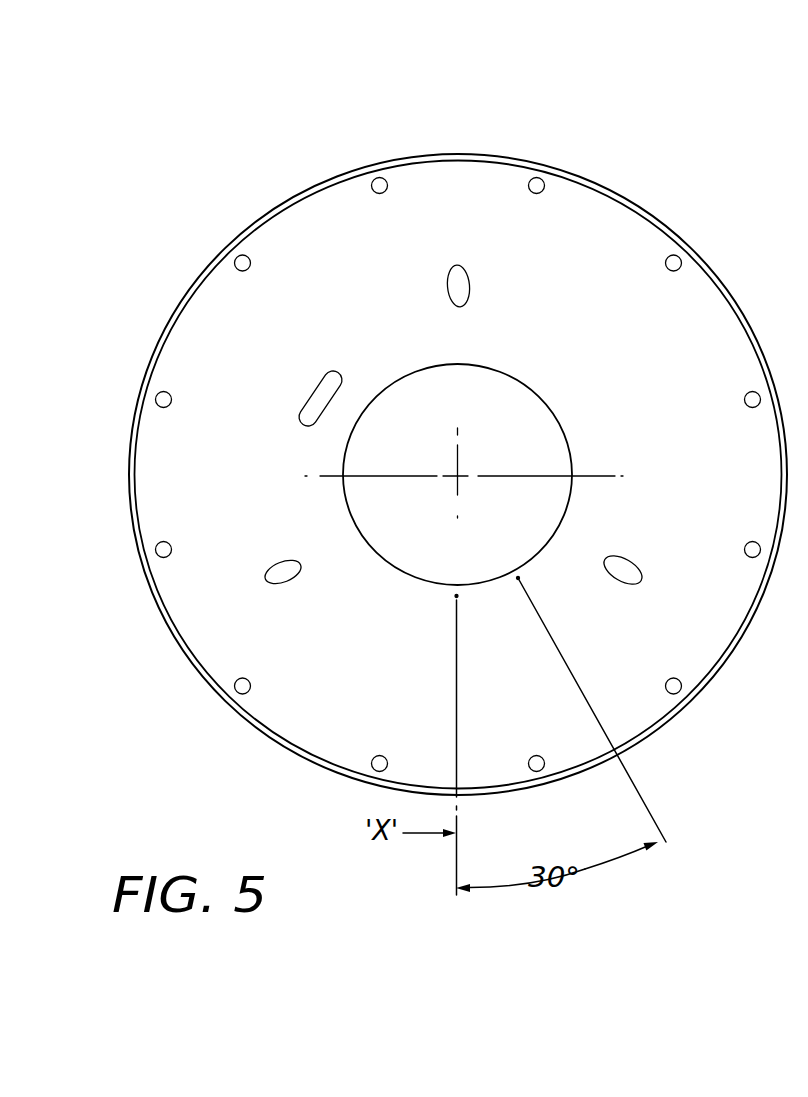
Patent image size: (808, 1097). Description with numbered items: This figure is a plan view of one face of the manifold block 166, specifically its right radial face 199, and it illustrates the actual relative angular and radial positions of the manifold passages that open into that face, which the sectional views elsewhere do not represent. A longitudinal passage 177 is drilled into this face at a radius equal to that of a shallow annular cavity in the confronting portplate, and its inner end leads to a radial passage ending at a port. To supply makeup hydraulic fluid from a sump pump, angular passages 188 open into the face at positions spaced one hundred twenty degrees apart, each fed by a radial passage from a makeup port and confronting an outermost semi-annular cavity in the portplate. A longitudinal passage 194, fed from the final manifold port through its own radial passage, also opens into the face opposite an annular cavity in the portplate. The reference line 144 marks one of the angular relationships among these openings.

The manifold block 166 is at (477, 153).
The right radial face of manifold block 199 is at (642, 408).
The angular passage 188 is at (468, 273).
The longitudinal passage 194 is at (313, 421).
The longitudinal passage 177 is at (450, 603).
The angled reference axis 144 is at (525, 590).